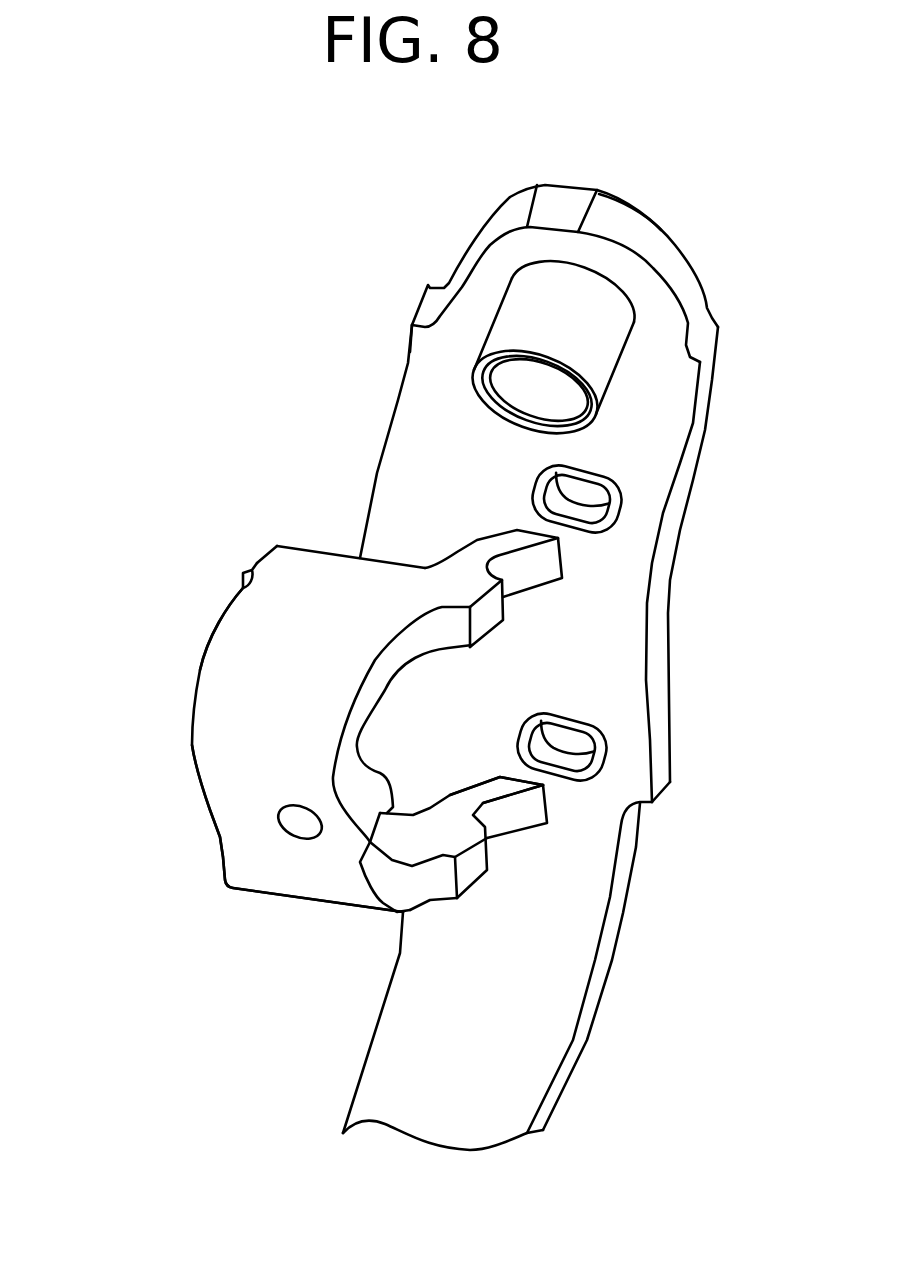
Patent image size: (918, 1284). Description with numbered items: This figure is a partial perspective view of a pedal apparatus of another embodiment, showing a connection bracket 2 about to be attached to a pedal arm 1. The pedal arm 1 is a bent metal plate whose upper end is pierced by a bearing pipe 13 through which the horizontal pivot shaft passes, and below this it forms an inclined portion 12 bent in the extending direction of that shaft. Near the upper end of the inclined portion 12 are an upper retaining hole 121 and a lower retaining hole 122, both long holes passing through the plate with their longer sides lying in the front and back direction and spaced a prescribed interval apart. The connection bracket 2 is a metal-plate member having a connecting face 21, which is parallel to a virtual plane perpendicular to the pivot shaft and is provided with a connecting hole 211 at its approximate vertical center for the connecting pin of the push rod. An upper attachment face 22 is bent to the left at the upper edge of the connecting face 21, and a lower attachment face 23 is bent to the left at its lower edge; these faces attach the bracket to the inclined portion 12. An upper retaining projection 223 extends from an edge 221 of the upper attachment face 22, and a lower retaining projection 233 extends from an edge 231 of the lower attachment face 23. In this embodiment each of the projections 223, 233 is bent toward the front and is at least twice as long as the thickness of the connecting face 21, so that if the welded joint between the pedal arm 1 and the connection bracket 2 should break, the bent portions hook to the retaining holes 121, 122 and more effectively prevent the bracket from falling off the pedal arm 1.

The pedal arm 1 is at (430, 370).
The inclined portion 12 is at (603, 623).
The upper retaining hole 121 is at (605, 463).
The lower retaining hole 122 is at (597, 718).
The bearing pipe 13 is at (573, 278).
The connection bracket 2 is at (195, 672).
The connecting face 21 is at (220, 808).
The connecting hole 211 is at (280, 817).
The upper attachment face 22 is at (258, 563).
The edge of the upper attachment face 221 is at (328, 552).
The upper retaining projection 223 is at (478, 540).
The lower attachment face 23 is at (453, 835).
The edge of the lower attachment face 231 is at (408, 808).
The lower retaining projection 233 is at (500, 812).